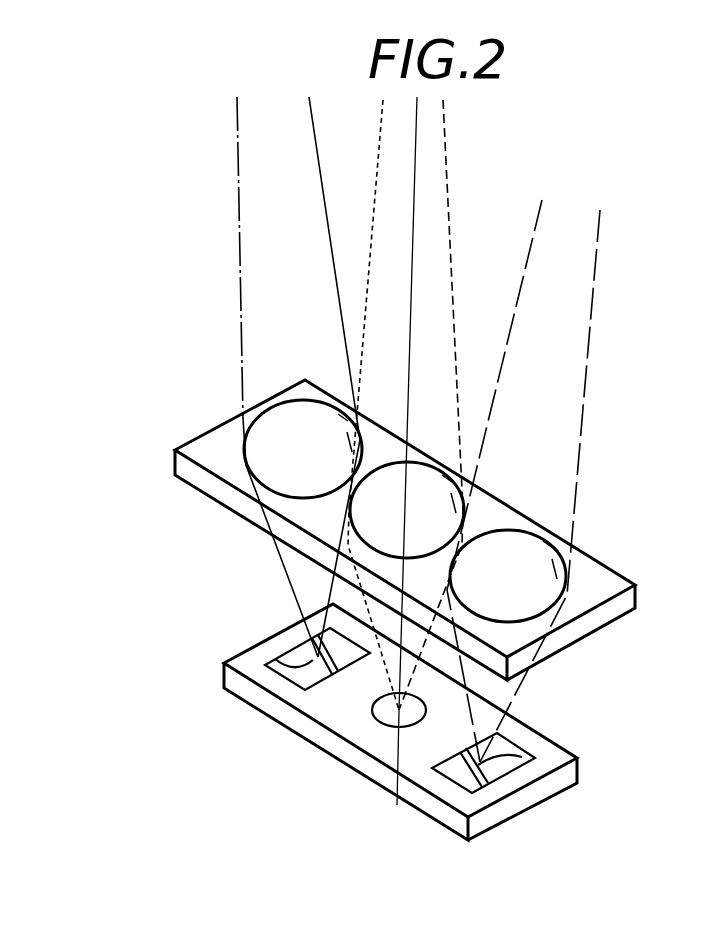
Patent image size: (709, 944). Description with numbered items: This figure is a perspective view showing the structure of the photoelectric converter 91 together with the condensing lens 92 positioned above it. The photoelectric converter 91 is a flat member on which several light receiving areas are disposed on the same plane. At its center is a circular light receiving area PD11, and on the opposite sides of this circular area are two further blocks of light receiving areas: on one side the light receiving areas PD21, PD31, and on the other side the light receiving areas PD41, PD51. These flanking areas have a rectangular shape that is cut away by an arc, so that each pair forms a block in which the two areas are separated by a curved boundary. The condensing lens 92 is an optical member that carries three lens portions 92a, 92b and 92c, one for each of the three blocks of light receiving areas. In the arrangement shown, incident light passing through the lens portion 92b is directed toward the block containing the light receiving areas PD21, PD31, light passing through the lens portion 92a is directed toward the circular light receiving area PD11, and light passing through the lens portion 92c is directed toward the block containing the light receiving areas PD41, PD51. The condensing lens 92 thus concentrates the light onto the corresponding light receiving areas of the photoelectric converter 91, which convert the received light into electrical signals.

The condensing lens 92 is at (185, 468).
The lens portion 92a is at (443, 493).
The lens portion 92b is at (270, 428).
The lens portion 92c is at (575, 548).
The photoelectric converter 91 is at (267, 707).
The circular light receiving area PD11 is at (380, 717).
The light receiving area PD21 is at (320, 638).
The light receiving area PD31 is at (265, 663).
The light receiving area PD41 is at (510, 748).
The light receiving area PD51 is at (462, 778).